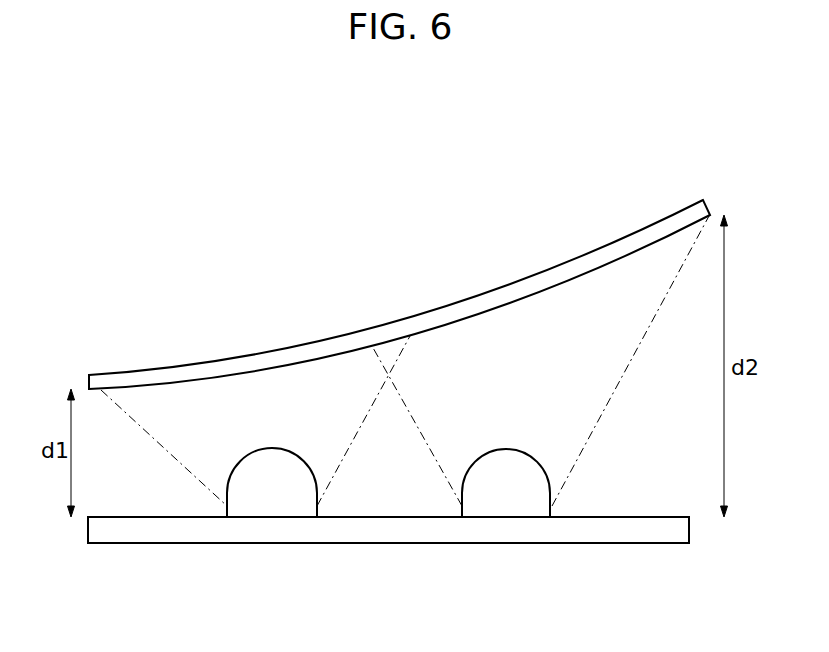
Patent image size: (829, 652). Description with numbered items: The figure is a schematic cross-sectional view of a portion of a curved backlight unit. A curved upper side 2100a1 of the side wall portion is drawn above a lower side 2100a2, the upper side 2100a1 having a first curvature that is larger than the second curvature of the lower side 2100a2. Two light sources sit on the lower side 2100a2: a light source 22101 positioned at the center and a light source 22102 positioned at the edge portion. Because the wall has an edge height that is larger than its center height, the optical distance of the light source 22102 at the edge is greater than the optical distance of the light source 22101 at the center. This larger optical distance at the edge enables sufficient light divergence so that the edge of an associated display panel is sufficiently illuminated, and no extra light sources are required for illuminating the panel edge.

The upper side 2100a1 is at (402, 322).
The lower side 2100a2 is at (393, 543).
The light source 22101 is at (268, 497).
The light source 22102 is at (512, 492).